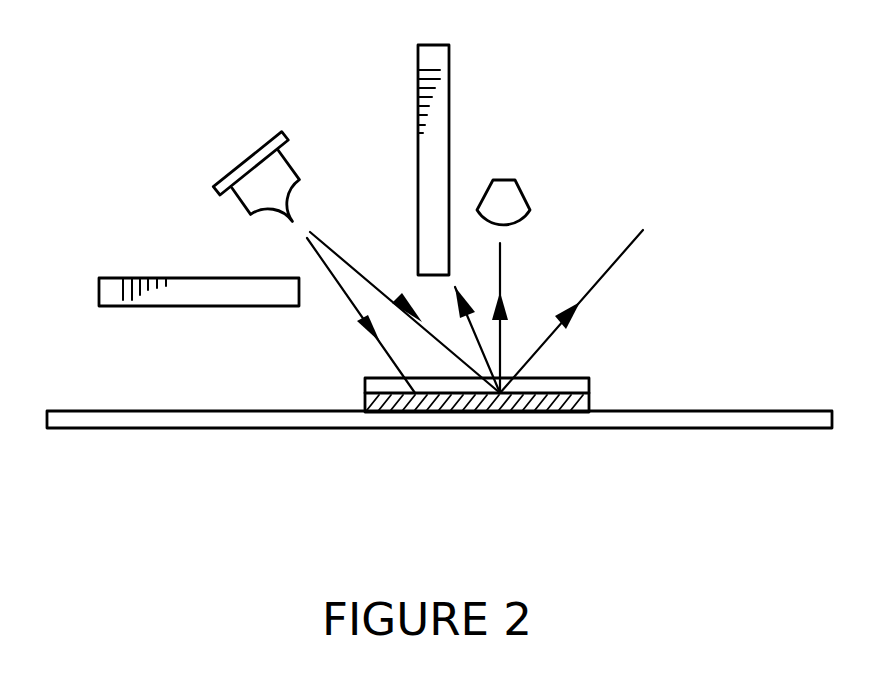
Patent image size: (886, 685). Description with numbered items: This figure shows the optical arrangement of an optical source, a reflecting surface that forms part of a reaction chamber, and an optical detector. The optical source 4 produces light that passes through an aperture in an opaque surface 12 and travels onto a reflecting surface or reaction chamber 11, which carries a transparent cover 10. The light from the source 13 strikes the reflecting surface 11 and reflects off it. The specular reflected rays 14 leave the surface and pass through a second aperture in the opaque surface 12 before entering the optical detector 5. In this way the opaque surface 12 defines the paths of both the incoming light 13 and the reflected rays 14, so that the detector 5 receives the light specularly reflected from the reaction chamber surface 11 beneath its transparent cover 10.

The optical source 4 is at (250, 142).
The opaque surface 12 is at (453, 88).
The optical detector 5 is at (533, 187).
The light from the source 13 is at (358, 343).
The specular reflected rays 14 is at (510, 290).
The transparent cover 10 is at (595, 402).
The reflecting surface or reaction chamber 11 is at (108, 422).